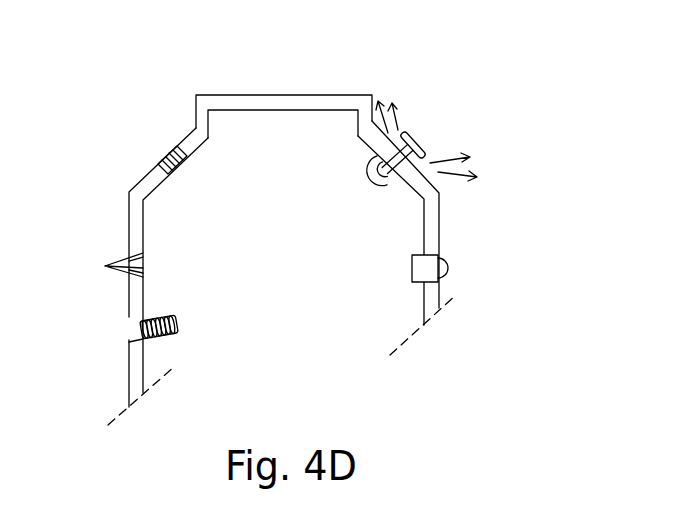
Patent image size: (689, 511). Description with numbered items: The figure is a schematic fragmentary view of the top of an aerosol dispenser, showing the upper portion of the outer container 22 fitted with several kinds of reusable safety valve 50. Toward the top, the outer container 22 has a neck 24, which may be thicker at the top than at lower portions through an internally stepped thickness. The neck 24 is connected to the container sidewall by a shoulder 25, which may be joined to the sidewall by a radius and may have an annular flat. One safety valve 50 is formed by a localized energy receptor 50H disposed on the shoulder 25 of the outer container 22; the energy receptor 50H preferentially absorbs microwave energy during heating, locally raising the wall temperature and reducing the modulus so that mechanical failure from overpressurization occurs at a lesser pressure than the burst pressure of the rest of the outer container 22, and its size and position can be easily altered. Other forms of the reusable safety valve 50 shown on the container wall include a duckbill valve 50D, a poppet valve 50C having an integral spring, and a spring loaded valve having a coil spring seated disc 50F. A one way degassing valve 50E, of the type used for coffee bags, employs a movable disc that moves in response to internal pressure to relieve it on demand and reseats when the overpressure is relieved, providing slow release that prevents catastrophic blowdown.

The outer container 22 is at (467, 325).
The neck 24 is at (243, 105).
The shoulder 25 is at (186, 134).
The reusable safety valve 50 is at (163, 162).
The localized energy receptor 50H is at (170, 173).
The duckbill valve 50D is at (143, 268).
The poppet valve 50C is at (379, 185).
The one way degassing valve 50E is at (402, 282).
The coil spring seated disc 50F is at (178, 327).